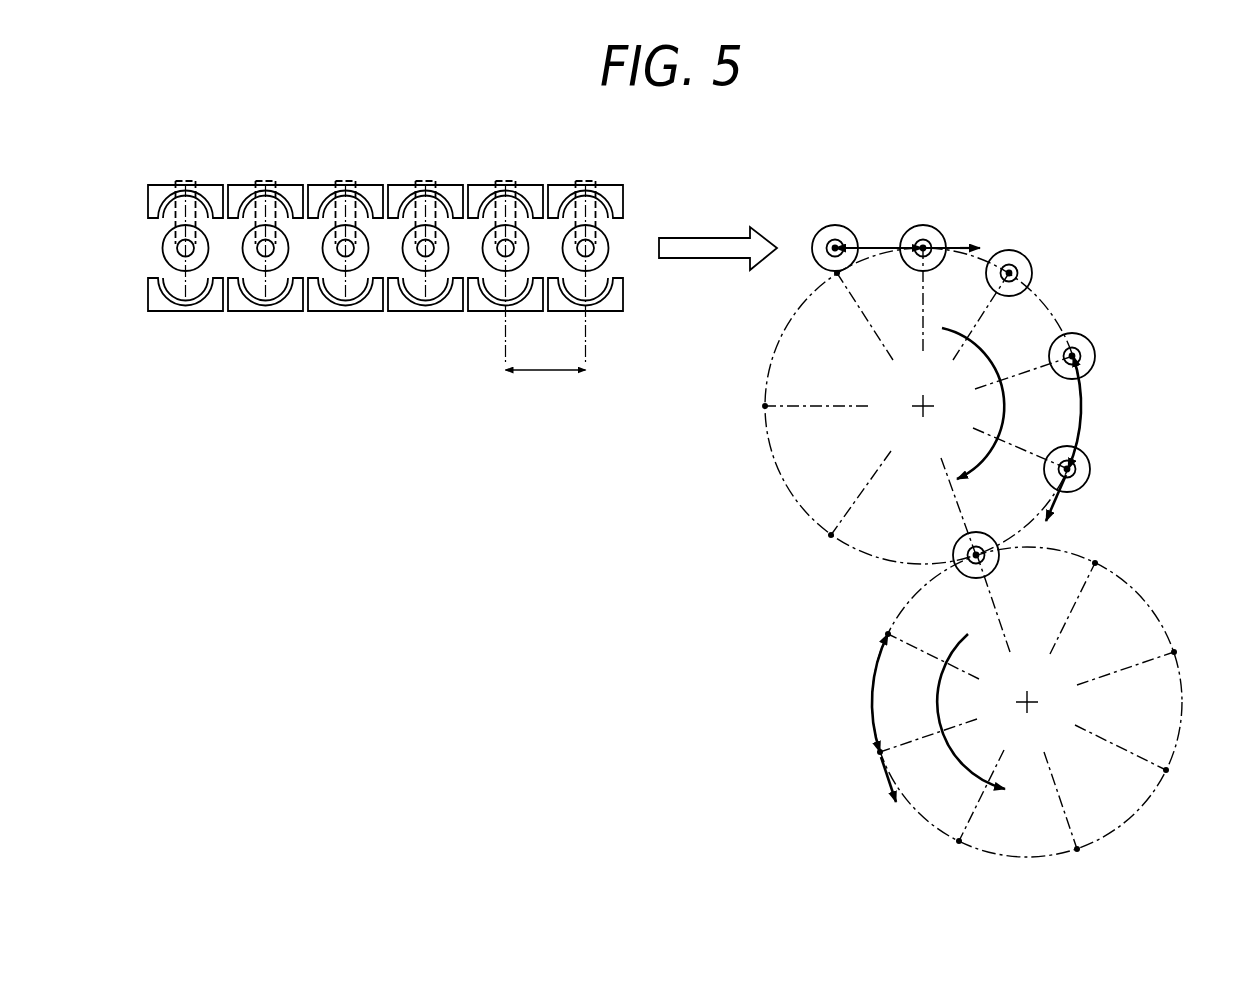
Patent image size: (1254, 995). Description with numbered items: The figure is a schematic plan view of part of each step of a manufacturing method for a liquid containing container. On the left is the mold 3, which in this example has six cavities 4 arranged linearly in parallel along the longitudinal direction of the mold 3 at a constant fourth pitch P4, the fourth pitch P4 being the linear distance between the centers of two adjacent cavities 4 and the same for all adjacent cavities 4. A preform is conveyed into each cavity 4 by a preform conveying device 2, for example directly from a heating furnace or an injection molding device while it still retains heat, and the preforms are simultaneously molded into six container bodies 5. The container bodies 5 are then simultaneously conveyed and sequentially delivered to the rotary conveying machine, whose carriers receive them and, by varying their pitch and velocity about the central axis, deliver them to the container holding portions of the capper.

The preform conveying device 2 is at (168, 210).
The mold 3 is at (186, 316).
The cavity 4 is at (178, 287).
The container body 5 is at (607, 248).
The fourth pitch P4 is at (546, 385).